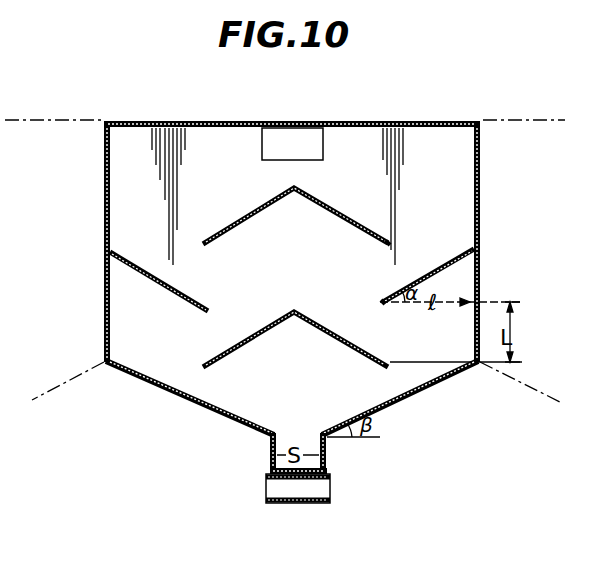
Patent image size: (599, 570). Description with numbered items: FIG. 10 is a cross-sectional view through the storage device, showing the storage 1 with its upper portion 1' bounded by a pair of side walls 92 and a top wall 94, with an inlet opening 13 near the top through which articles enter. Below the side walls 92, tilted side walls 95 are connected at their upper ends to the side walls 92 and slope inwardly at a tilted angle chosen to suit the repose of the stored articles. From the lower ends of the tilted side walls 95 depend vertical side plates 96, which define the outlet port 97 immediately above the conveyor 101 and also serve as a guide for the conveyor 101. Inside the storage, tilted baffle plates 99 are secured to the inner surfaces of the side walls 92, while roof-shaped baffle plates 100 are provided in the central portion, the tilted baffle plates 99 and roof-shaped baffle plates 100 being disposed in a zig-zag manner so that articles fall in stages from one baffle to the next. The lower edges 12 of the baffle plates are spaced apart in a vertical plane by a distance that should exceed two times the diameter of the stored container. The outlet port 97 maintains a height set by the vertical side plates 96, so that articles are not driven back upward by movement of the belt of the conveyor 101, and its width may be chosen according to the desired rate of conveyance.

The apparatus 1 is at (334, 89).
The apparatus portion 1' is at (139, 94).
The lower edge of baffle 12 is at (387, 240).
The inlet 13 is at (262, 148).
The side walls 92 is at (104, 176).
The top wall 94 is at (397, 120).
The tilted side walls 95 is at (177, 393).
The vertical side plates 96 is at (327, 460).
The outlet port 97 is at (270, 437).
The tilted baffle plates 99 is at (146, 273).
The roof-shaped baffle plates 100 is at (237, 225).
The conveyor 101 is at (330, 488).